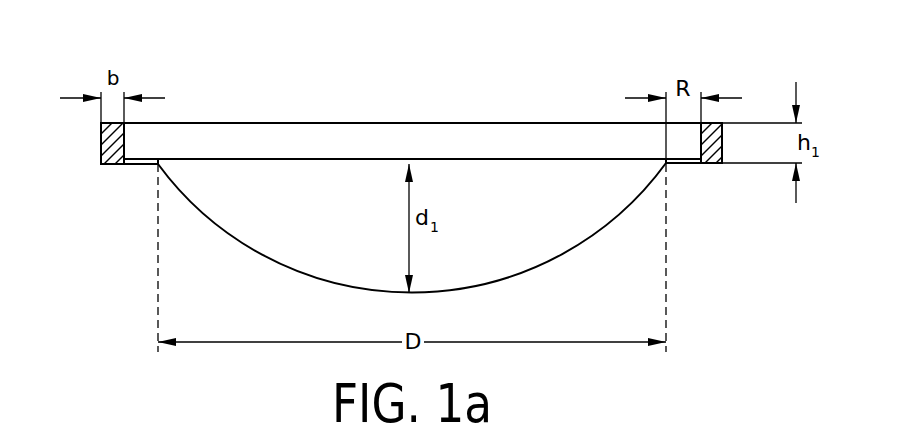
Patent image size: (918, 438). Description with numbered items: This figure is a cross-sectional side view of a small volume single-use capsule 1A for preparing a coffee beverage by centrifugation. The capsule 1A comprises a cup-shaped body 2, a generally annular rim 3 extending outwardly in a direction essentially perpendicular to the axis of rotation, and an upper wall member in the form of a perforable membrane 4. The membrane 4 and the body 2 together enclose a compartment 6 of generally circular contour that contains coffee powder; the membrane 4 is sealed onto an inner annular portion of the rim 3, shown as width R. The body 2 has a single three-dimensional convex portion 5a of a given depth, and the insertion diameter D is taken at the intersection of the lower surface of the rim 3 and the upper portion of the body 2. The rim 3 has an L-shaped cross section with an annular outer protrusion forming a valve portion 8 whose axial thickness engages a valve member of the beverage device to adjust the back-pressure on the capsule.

The single-use capsule 1A is at (84, 69).
The cup-shaped body 2 is at (563, 255).
The rim 3 is at (685, 165).
The perforable membrane 4 is at (532, 160).
The convex portion 5a is at (282, 268).
The compartment 6 is at (300, 177).
The valve portion 8 is at (707, 162).